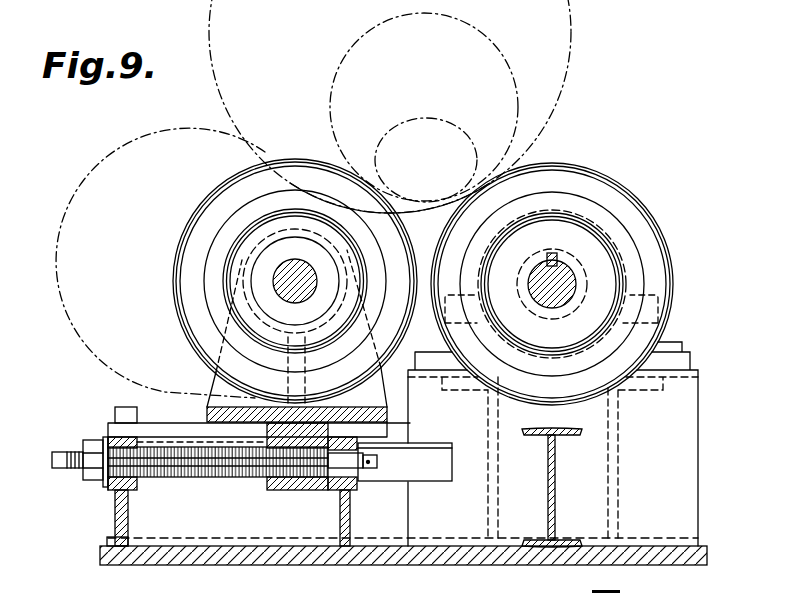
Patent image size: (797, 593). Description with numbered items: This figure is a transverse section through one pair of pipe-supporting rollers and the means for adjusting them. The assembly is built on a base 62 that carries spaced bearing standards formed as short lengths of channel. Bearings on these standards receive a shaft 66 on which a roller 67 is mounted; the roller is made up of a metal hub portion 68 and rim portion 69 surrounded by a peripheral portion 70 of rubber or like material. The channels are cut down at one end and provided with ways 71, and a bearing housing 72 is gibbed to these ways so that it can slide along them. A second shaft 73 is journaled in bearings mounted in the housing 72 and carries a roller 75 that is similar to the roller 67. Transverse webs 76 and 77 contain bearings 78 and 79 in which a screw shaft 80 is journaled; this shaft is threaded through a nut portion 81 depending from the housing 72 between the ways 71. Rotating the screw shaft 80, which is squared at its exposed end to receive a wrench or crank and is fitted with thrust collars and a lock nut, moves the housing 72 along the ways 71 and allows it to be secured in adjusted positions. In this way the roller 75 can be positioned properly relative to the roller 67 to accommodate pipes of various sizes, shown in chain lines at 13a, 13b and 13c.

The pipe 13a is at (460, 103).
The pipe 13b is at (335, 87).
The pipe 13c is at (560, 98).
The base 62 is at (392, 565).
The shaft 66 is at (572, 281).
The roller 67 is at (660, 277).
The hub portion 68 is at (287, 240).
The rim portion 69 is at (233, 232).
The peripheral portion 70 is at (233, 197).
The ways 71 is at (170, 418).
The bearing housing 72 is at (222, 390).
The shaft 73 is at (283, 286).
The roller 75 is at (178, 275).
The transverse web 76 is at (128, 507).
The transverse web 77 is at (350, 520).
The bearing 78 is at (110, 482).
The bearing 79 is at (352, 482).
The screw shaft 80 is at (247, 476).
The nut portion 81 is at (312, 487).